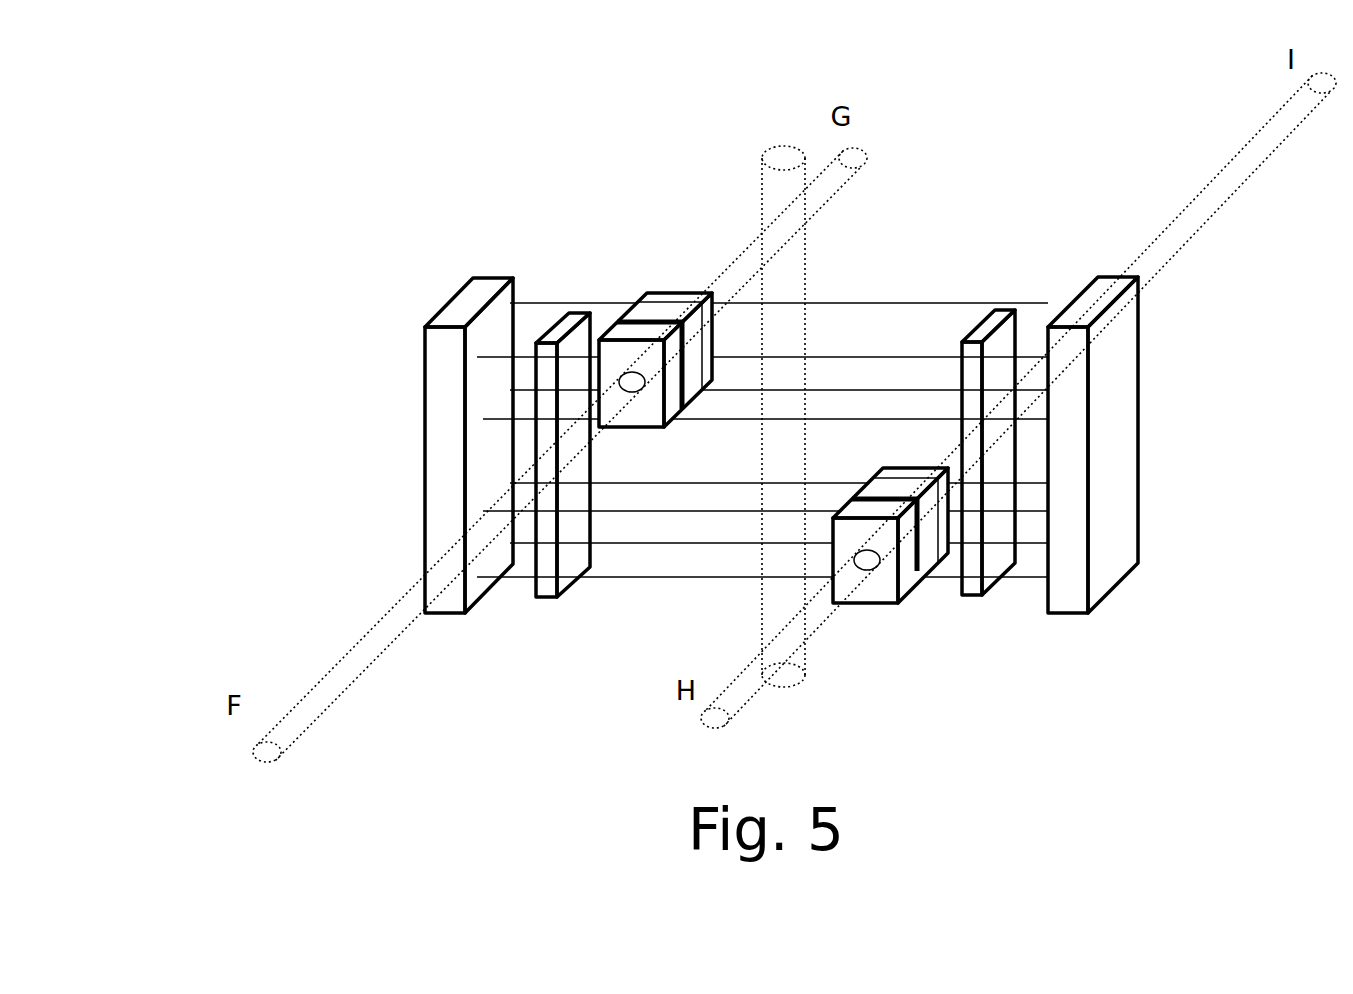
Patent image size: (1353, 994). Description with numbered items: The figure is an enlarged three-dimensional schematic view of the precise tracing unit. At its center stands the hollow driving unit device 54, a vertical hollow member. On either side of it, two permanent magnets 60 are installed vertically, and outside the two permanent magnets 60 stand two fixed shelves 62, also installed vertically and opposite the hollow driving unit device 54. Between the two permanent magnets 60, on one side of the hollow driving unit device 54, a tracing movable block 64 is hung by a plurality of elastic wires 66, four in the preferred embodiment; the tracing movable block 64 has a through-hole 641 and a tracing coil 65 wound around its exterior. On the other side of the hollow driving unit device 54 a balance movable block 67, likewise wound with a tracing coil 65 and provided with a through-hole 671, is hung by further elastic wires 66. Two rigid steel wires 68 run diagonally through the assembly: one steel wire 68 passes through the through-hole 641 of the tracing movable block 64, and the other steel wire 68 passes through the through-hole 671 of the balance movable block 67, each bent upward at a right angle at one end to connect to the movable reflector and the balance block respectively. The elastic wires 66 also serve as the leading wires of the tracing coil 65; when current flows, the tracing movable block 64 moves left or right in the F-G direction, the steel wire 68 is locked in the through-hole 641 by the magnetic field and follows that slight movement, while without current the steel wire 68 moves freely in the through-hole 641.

The hollow driving unit device 54 is at (783, 158).
The permanent magnet 60 is at (568, 310).
The fixed shelf 62 is at (485, 290).
The tracing movable block 64 is at (653, 289).
The through-hole 641 is at (633, 385).
The tracing coil 65 is at (657, 295).
The elastic wire 66 is at (537, 302).
The balance movable block 67 is at (902, 466).
The through-hole 671 is at (868, 565).
The steel wire 68 is at (363, 660).